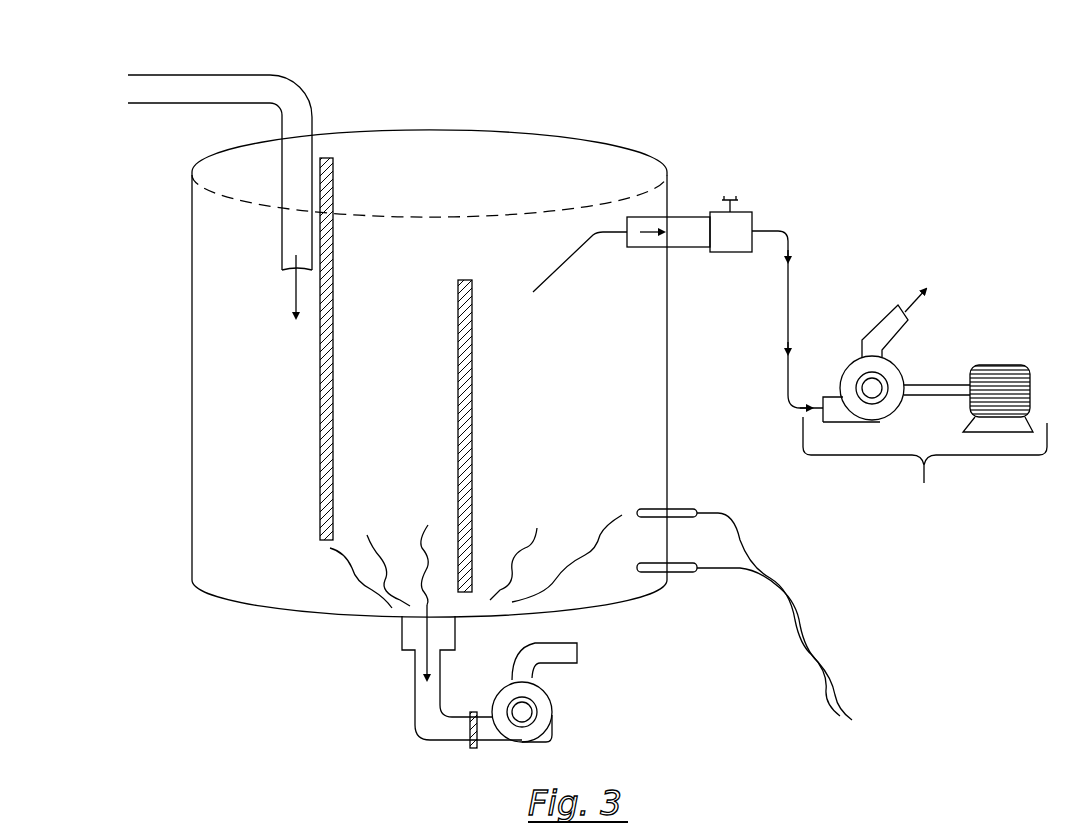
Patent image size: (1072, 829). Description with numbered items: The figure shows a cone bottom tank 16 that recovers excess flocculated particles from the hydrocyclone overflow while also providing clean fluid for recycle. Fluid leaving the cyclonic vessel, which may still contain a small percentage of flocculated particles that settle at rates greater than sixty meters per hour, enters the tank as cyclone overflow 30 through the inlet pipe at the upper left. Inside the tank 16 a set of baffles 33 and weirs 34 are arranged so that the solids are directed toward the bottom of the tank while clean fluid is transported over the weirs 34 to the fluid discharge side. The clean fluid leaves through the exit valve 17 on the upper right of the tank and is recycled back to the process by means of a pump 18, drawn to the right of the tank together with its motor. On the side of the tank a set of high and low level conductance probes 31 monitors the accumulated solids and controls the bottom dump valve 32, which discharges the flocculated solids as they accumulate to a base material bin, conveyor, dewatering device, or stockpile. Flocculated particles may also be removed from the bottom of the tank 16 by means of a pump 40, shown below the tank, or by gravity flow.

The cone bottom tank 16 is at (192, 487).
The exit valve 17 is at (740, 222).
The pump 18 is at (925, 403).
The cyclone overflow 30 is at (190, 75).
The high and low level conductance probes 31 is at (681, 514).
The bottom dump valve 32 is at (410, 642).
The baffles 33 is at (330, 395).
The weirs 34 is at (472, 420).
The pump 40 is at (543, 703).